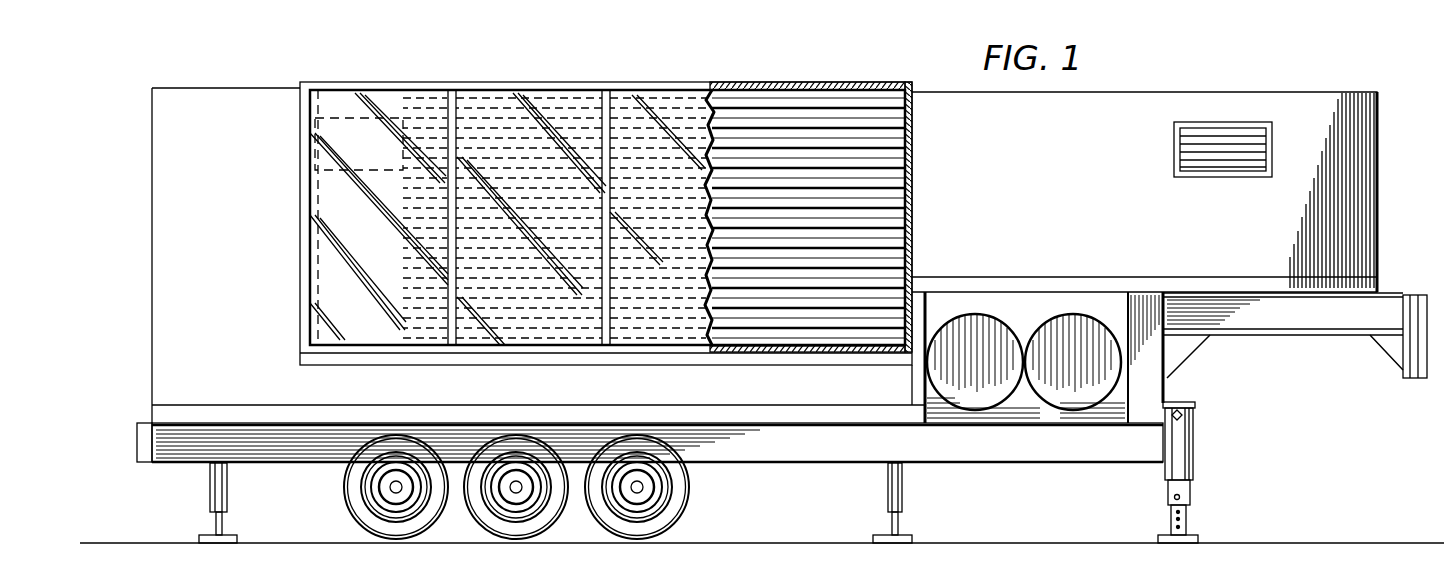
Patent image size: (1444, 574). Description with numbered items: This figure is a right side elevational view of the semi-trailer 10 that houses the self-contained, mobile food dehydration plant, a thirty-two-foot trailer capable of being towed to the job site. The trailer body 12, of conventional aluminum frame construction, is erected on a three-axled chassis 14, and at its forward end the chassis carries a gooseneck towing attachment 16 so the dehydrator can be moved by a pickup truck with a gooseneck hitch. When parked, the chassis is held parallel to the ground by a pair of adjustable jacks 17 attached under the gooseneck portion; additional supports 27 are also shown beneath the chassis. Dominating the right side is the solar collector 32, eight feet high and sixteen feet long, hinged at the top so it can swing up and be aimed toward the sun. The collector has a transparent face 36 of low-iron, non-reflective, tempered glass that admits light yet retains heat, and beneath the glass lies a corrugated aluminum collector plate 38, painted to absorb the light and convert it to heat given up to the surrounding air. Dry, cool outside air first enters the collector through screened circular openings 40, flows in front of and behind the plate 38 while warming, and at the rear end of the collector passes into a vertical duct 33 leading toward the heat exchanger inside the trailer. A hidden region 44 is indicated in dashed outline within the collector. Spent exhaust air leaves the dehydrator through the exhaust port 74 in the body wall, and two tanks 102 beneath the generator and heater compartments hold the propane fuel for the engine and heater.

The semi-trailer 10 is at (1222, 338).
The trailer body 12 is at (1365, 140).
The chassis 14 is at (1007, 450).
The towing attachment 16 is at (1388, 305).
The adjustable jacks 17 is at (1192, 458).
The jack stands 27 is at (210, 497).
The solar collector 32 is at (588, 78).
The vertical duct 33 is at (327, 283).
The transparent face 36 is at (667, 110).
The collector plate 38 is at (793, 115).
The circular openings 40 is at (912, 225).
The hidden counter 44 is at (352, 130).
The exhaust port 74 is at (1220, 133).
The tanks 102 is at (1055, 323).